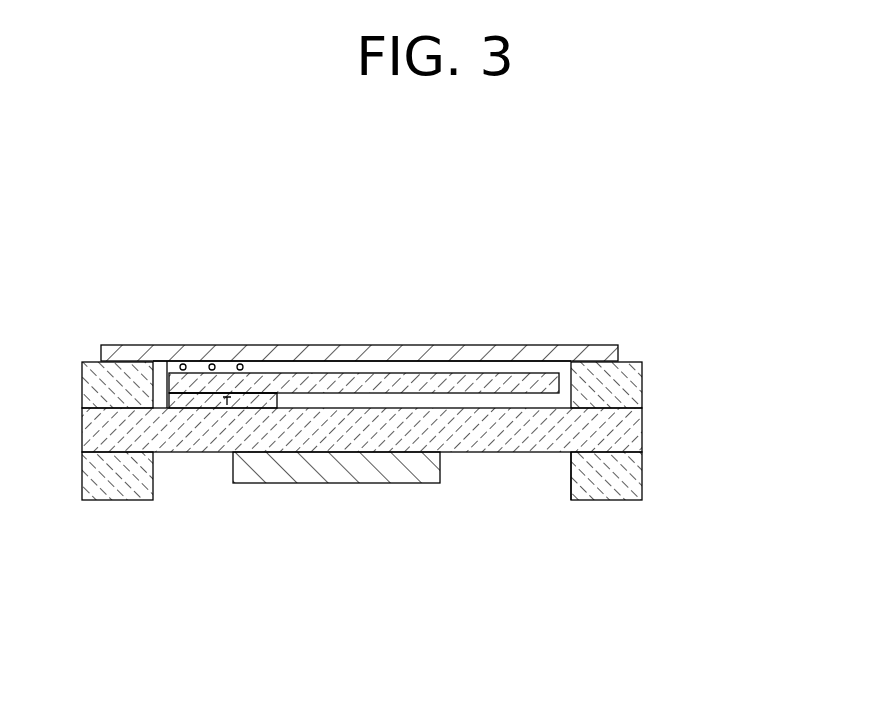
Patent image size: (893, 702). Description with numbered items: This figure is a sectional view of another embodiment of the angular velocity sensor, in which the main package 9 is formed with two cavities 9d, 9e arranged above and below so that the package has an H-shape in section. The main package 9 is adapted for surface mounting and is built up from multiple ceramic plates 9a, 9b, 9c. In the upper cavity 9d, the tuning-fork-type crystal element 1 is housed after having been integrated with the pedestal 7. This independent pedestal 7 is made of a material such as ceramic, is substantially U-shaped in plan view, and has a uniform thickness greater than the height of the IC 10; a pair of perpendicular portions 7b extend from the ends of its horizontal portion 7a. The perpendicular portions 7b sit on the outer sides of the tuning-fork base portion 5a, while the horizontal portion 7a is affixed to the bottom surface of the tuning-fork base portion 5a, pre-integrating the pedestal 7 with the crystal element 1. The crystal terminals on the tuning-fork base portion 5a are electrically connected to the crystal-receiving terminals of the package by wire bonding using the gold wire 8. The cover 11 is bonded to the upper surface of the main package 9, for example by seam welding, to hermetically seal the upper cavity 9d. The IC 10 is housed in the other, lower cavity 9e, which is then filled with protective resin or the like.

The tuning-fork-type crystal element 1 is at (436, 360).
The tuning-fork base portion 5a is at (208, 390).
The independent pedestal 7 is at (206, 320).
The horizontal portion 7a is at (190, 400).
The perpendicular portions 7b is at (223, 344).
The gold wire 8 is at (239, 364).
The main package 9 is at (420, 441).
The ceramic plate 9a is at (622, 468).
The ceramic plate 9b is at (627, 427).
The ceramic plate 9c is at (630, 388).
The cavity 9d is at (550, 404).
The cavity 9e is at (571, 485).
The IC 10 is at (367, 475).
The cover 11 is at (502, 352).